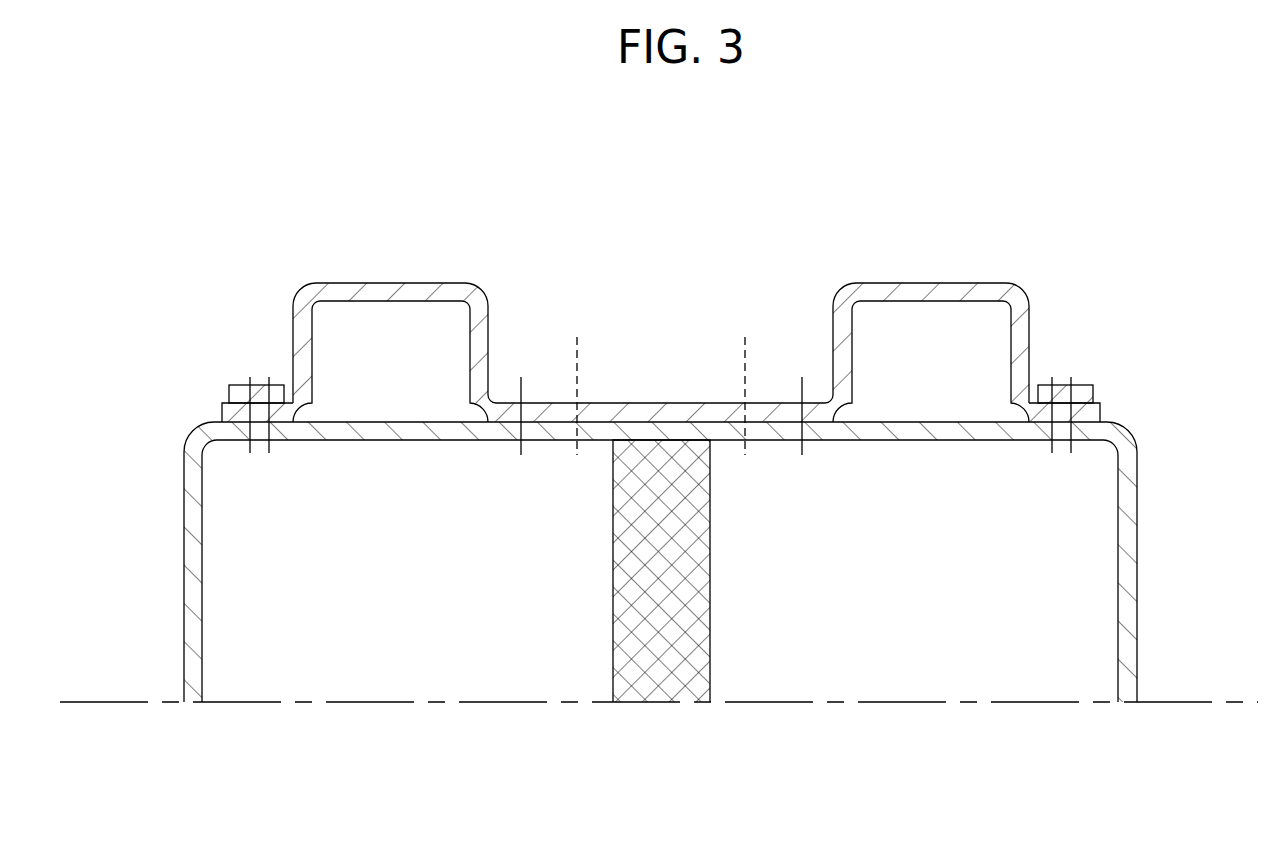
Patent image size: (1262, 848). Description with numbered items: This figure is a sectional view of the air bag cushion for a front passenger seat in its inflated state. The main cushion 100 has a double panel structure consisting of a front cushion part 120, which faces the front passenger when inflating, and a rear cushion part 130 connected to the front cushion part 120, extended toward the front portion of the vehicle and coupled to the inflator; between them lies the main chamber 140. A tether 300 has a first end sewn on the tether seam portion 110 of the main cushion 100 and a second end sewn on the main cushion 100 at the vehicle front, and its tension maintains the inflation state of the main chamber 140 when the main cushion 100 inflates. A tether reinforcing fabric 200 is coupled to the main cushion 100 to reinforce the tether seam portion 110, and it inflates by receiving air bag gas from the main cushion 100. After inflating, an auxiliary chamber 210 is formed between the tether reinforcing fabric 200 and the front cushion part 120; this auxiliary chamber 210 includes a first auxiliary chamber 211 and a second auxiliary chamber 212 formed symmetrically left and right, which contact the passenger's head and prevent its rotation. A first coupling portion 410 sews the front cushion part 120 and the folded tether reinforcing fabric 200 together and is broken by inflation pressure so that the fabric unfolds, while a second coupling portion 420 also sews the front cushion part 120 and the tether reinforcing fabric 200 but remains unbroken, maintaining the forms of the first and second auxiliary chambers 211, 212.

The main cushion 100 is at (1148, 572).
The tether seam portion 110 is at (668, 440).
The front cushion part 120 is at (340, 427).
The rear cushion part 130 is at (188, 592).
The main chamber 140 is at (938, 652).
The tether reinforcing fabric 200 is at (661, 313).
The auxiliary chamber 210 is at (671, 299).
The first auxiliary chamber 211 is at (360, 357).
The second auxiliary chamber 212 is at (972, 355).
The tether 300 is at (670, 667).
The first coupling portion 410 is at (575, 363).
The second coupling portion 420 is at (521, 455).